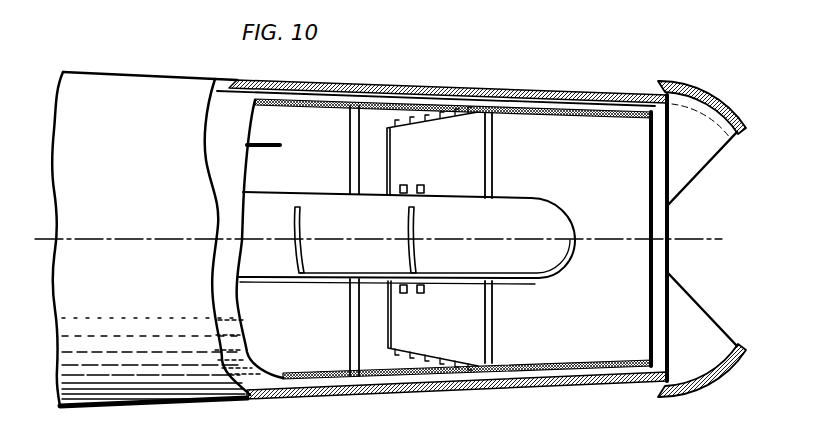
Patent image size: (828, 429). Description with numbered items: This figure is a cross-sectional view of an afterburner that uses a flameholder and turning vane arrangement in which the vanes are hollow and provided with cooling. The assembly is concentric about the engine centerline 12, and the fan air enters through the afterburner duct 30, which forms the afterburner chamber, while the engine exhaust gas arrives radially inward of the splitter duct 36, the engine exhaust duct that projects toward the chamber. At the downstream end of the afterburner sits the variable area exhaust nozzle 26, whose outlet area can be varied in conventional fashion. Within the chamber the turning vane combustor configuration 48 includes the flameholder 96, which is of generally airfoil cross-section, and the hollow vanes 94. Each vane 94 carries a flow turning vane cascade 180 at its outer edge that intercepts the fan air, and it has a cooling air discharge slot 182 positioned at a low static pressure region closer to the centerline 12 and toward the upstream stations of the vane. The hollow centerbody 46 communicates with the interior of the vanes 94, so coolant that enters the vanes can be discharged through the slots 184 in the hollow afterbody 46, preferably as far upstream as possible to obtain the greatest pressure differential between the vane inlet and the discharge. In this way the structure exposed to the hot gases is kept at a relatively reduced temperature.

The axis 12 is at (680, 238).
The variable area exhaust nozzle 26 is at (698, 93).
The afterburner duct 30 is at (520, 91).
The splitter duct 36 is at (262, 150).
The centerbody 46 is at (552, 256).
The turning vane combustor configuration 48 is at (498, 322).
The vane 94 is at (478, 152).
The flameholder 96 is at (355, 149).
The flow turning vane cascade 180 is at (421, 119).
The cooling air discharge slot 182 is at (404, 183).
The slots 184 is at (408, 221).